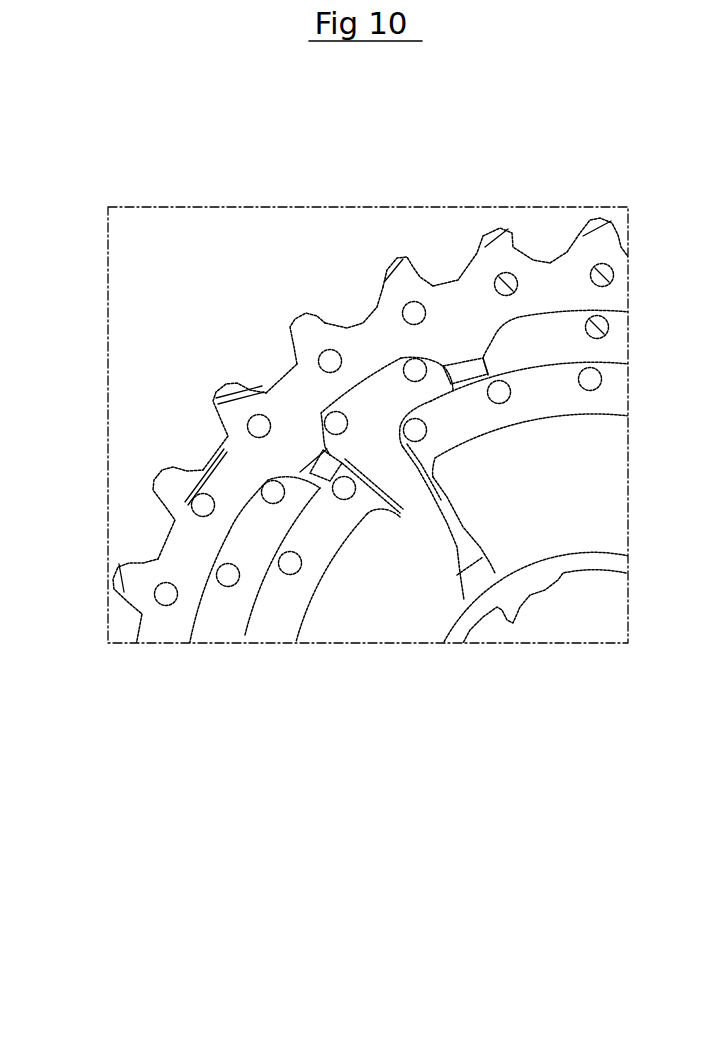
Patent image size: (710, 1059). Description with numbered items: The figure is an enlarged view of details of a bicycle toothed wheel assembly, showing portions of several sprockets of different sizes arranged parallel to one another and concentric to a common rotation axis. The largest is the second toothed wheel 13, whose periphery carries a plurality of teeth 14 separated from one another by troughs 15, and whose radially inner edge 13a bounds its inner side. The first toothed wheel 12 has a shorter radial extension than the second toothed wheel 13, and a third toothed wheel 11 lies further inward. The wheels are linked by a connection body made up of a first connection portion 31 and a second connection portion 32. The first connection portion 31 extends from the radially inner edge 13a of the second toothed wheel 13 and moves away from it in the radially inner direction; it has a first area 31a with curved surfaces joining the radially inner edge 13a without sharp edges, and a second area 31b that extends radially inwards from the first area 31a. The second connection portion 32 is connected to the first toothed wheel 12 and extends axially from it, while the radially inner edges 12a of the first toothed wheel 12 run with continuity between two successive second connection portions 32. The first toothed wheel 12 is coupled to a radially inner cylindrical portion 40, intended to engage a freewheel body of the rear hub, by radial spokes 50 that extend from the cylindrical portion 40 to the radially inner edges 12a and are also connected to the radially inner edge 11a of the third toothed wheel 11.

The third toothed wheel 11 is at (568, 398).
The radially inner edge of the third toothed wheel 11a is at (488, 435).
The first toothed wheel 12 is at (253, 537).
The radially inner edges of the first toothed wheel 12a is at (260, 583).
The second toothed wheel 13 is at (165, 623).
The radially inner edge of the second toothed wheel 13a is at (568, 332).
The teeth 14 is at (305, 317).
The troughs 15 is at (357, 310).
The first connection portion 31 is at (293, 460).
The first area 31a is at (439, 357).
The second area 31b is at (459, 357).
The second connection portion 32 is at (315, 477).
The radially inner cylindrical portion 40 is at (602, 562).
The radial spokes 50 is at (432, 523).